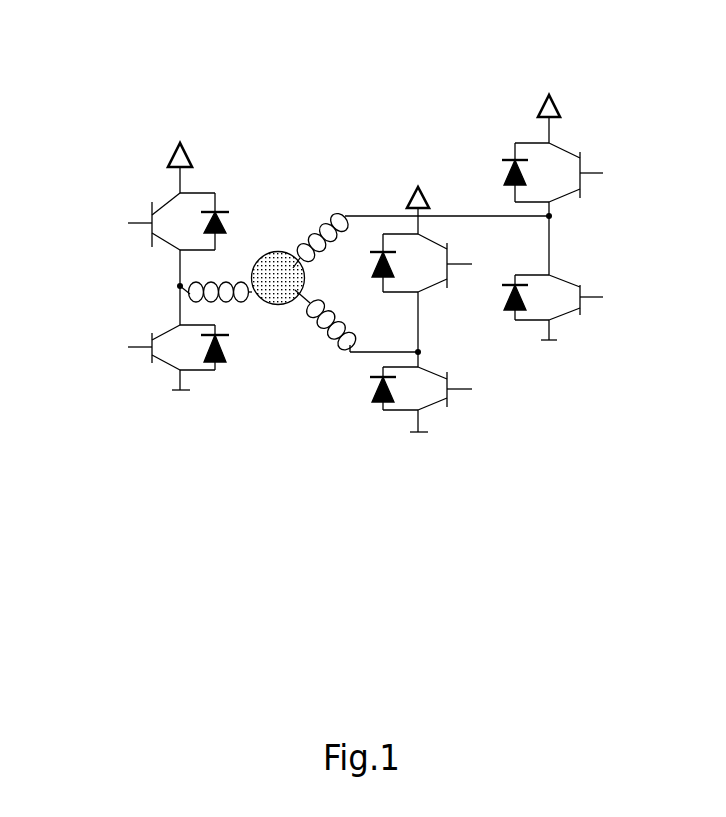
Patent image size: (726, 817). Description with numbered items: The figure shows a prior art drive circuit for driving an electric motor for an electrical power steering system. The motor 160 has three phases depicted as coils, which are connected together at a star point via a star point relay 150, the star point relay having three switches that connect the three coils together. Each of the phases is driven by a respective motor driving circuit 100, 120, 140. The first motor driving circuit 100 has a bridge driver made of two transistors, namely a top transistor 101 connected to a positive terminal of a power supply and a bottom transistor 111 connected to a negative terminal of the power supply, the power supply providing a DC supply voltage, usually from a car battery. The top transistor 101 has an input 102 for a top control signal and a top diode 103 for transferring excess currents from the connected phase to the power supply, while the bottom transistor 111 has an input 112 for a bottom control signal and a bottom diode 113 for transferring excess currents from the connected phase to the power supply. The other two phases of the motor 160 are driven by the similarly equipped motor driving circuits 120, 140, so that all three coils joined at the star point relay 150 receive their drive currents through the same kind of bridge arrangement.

The first motor driving circuit 100 is at (190, 162).
The top transistor 101 is at (167, 198).
The input 102 is at (128, 224).
The top diode 103 is at (225, 210).
The bottom transistor 111 is at (163, 363).
The input 112 is at (120, 348).
The bottom diode 113 is at (227, 360).
The motor driving circuit 120 is at (423, 197).
The motor driving circuit 140 is at (555, 107).
The star point relay 150 is at (279, 305).
The motor 160 is at (320, 335).